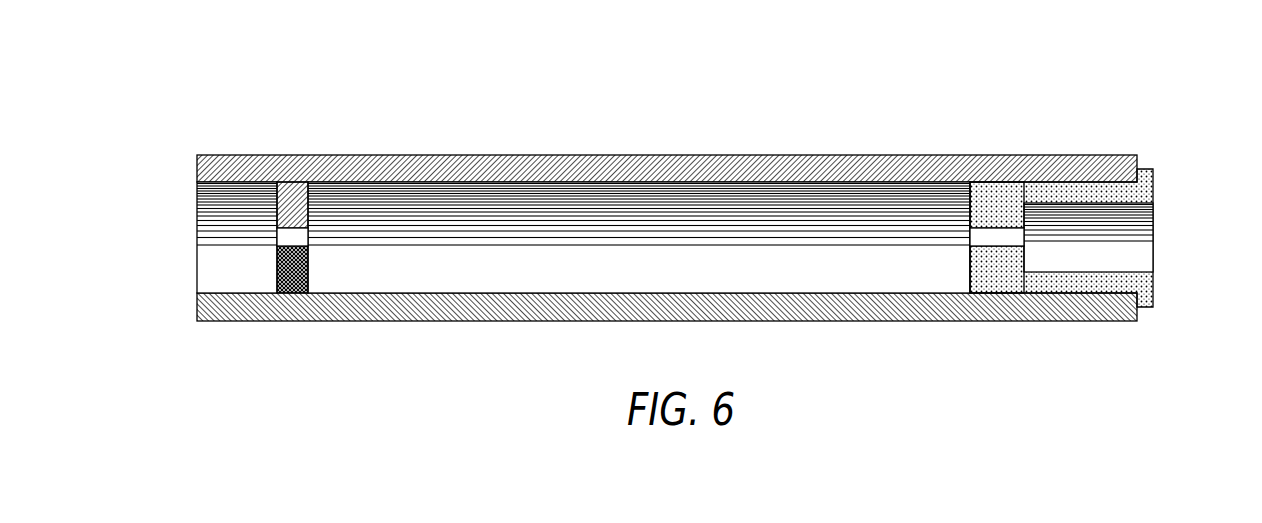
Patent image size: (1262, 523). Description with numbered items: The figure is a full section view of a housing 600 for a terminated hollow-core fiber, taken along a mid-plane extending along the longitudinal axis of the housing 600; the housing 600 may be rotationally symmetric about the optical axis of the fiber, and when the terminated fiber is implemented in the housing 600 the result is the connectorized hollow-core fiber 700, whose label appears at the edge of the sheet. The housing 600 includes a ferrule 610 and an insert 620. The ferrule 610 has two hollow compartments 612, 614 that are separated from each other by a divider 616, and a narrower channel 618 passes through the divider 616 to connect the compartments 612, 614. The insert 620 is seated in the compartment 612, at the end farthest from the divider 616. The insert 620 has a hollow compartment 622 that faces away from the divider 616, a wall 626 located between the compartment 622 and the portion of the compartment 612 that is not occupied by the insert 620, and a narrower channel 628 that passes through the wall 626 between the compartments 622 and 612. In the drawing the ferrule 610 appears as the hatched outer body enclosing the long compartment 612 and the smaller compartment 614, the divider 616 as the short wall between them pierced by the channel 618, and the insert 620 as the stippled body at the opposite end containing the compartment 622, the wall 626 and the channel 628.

The housing 600 is at (168, 72).
The ferrule 610 is at (517, 155).
The hollow compartment 612 is at (639, 237).
The hollow compartment 614 is at (237, 237).
The divider 616 is at (298, 265).
The channel 618 is at (292, 235).
The insert 620 is at (1155, 282).
The hollow compartment 622 is at (1088, 237).
The wall 626 is at (992, 259).
The channel 628 is at (998, 233).
The connectorized hollow-core fiber 700 is at (85, 522).